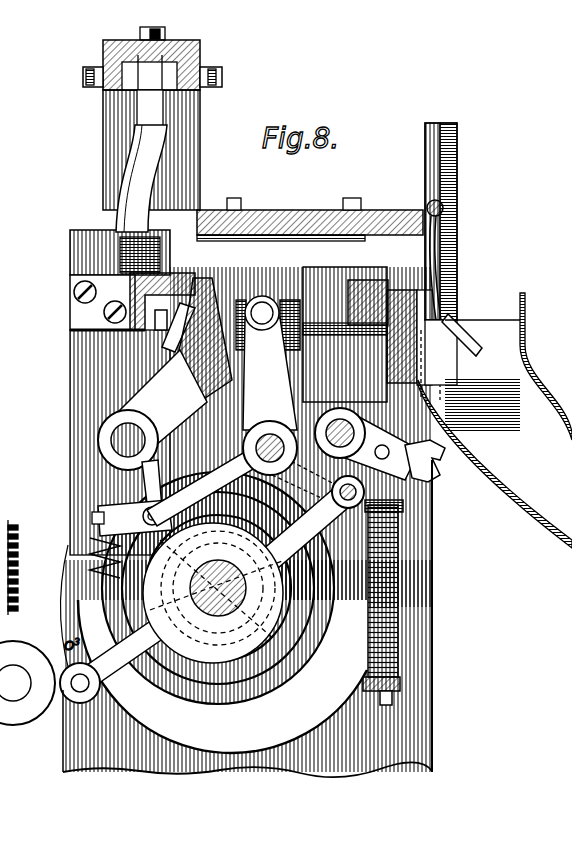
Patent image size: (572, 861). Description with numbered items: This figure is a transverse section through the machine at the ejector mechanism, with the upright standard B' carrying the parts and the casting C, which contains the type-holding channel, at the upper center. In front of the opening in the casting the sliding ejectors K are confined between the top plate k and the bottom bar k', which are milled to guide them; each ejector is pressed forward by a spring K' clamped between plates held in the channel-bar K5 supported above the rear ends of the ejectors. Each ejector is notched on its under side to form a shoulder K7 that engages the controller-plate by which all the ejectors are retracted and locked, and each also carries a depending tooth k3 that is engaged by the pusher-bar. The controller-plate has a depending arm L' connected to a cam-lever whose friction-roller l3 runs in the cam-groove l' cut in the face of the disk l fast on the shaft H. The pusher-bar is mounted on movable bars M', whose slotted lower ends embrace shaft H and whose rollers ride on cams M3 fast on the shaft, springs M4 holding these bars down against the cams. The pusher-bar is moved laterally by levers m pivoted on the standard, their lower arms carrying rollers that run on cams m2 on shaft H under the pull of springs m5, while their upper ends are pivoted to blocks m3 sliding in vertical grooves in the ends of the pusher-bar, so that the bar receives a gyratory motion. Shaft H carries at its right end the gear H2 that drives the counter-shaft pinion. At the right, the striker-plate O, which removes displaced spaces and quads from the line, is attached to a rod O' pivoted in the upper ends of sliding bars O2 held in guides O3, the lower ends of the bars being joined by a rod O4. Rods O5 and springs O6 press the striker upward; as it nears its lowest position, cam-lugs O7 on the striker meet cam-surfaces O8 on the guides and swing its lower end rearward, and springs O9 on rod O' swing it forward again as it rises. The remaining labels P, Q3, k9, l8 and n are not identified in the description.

The channel-bar K5 is at (172, 42).
The springs K' is at (135, 182).
The depending tooth k3 is at (141, 178).
The shoulder K7 is at (163, 287).
The bottom bar k' is at (142, 332).
The top plate k is at (310, 212).
The sliding ejectors K is at (281, 248).
The rib k9 is at (308, 278).
The blocks m3 is at (231, 314).
The casting C is at (360, 334).
The movable bars M' is at (345, 338).
The levers m is at (288, 380).
The friction-roller l3 is at (428, 345).
The striker-plate O is at (452, 254).
The guides O3 is at (439, 124).
The rod O' is at (454, 209).
The sliding bars O2 is at (430, 205).
The springs O9 is at (445, 224).
The cam-lugs O7 is at (448, 292).
The cam-surfaces O8 is at (450, 313).
The chute P is at (520, 352).
The disk l is at (222, 676).
The cam-groove l' is at (66, 617).
The springs M4 is at (300, 648).
The rod O4 is at (199, 593).
The arm Q3 is at (298, 535).
The shaft H is at (213, 593).
The cams m2 is at (217, 588).
The depending arm L' is at (165, 374).
The link l8 is at (167, 481).
The springs m5 is at (95, 518).
The cams M3 is at (296, 422).
The springs O6 is at (400, 556).
The rods O5 is at (386, 705).
The standard B' is at (247, 618).
The gear H2 is at (22, 567).
The wheel n is at (27, 700).